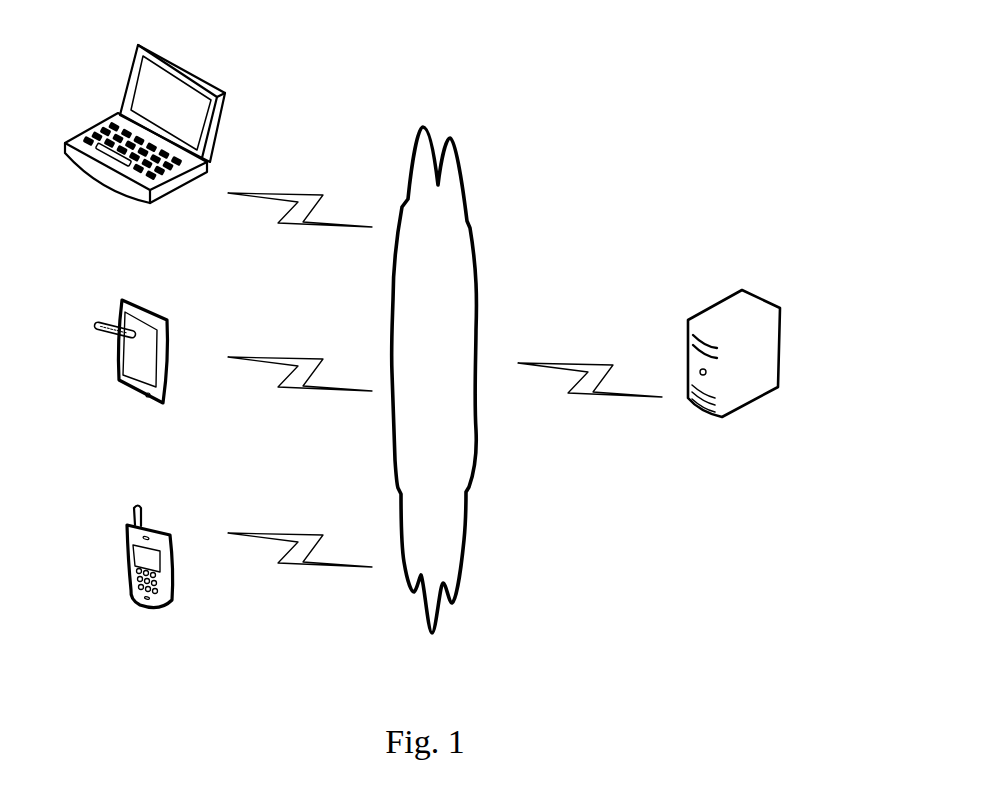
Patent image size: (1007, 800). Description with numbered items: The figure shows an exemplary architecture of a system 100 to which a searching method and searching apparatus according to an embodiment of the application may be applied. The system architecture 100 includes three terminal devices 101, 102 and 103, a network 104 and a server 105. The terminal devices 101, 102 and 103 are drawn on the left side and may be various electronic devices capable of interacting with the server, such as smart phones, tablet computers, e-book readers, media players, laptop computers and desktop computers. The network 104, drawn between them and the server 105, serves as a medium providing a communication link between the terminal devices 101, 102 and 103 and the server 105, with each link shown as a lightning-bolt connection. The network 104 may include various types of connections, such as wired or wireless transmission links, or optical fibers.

The system architecture 100 is at (647, 35).
The terminal device 101 is at (150, 580).
The terminal device 102 is at (131, 373).
The terminal device 103 is at (145, 144).
The network 104 is at (434, 380).
The server 105 is at (734, 377).